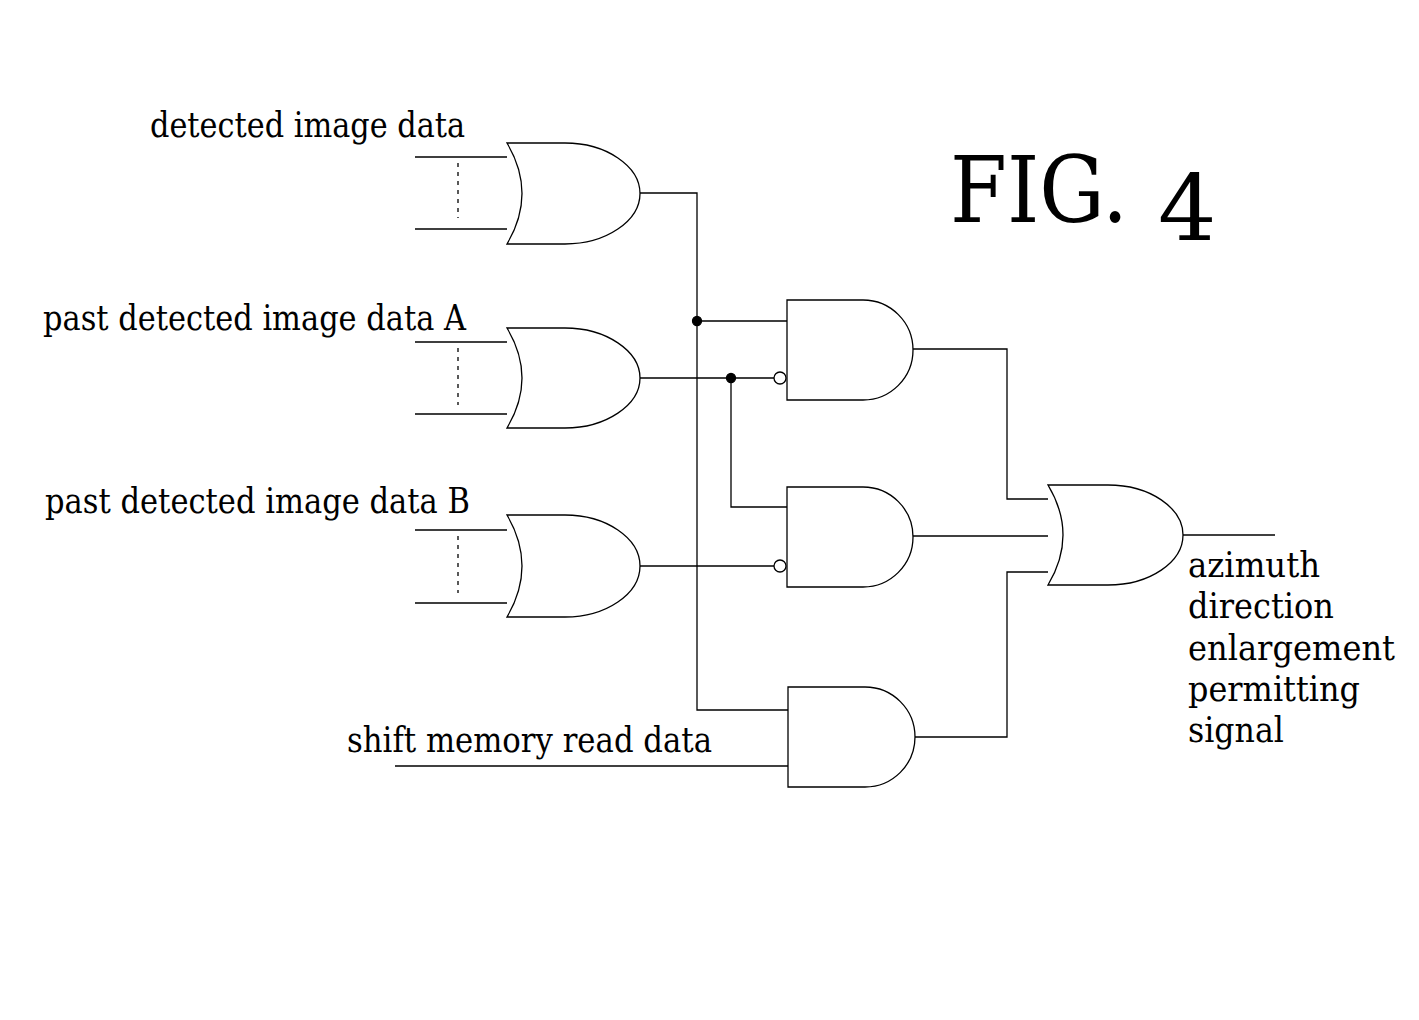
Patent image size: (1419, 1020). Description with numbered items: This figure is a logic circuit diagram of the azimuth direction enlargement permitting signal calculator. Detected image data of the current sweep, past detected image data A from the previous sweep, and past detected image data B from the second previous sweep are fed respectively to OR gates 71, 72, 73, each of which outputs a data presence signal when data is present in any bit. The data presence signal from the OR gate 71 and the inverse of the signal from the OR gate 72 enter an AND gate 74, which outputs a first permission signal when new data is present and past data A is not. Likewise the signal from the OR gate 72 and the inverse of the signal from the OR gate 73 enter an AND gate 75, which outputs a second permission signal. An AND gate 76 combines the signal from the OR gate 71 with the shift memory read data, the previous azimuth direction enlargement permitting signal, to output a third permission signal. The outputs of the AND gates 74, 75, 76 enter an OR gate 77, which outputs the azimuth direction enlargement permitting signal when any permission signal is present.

The OR gate 71 is at (647, 141).
The OR gate 72 is at (620, 334).
The OR gate 73 is at (620, 521).
The AND gate 74 is at (886, 303).
The AND gate 75 is at (887, 490).
The AND gate 76 is at (889, 690).
The OR gate 77 is at (1150, 490).